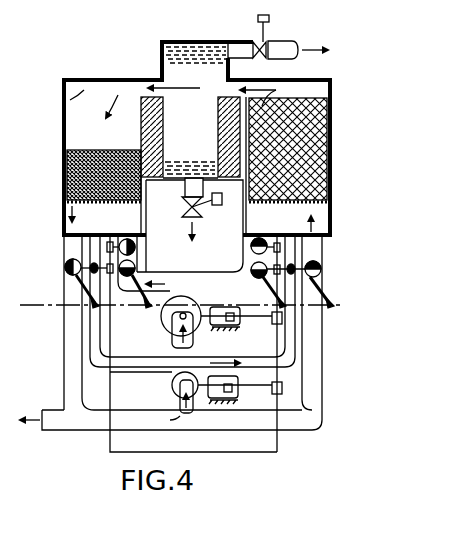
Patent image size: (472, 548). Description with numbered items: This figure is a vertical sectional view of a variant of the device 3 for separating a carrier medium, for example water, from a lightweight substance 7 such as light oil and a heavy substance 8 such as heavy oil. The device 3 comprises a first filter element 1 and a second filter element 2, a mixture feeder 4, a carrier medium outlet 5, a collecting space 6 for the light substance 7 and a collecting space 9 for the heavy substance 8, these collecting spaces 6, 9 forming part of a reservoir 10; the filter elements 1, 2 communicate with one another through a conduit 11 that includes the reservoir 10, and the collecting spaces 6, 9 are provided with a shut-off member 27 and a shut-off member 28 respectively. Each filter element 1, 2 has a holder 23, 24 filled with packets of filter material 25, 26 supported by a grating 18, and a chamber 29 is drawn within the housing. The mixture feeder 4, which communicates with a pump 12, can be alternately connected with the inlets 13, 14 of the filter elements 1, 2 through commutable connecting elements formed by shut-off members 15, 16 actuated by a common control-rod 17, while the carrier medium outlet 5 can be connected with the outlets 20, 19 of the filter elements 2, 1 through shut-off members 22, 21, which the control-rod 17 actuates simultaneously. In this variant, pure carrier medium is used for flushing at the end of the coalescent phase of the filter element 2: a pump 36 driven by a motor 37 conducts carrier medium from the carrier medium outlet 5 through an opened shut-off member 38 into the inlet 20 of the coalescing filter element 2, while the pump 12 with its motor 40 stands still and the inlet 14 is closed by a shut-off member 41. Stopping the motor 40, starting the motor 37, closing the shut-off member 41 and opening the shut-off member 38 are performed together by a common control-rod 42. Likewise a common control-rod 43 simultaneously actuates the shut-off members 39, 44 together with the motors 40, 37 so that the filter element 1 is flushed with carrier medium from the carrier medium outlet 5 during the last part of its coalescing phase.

The first filter element 1 is at (64, 166).
The second filter element 2 is at (332, 178).
The device 3 is at (100, 58).
The mixture feeder 4 is at (170, 296).
The carrier medium outlet 5 is at (54, 410).
The collecting space 6 is at (176, 40).
The lightweight substance 7 is at (206, 40).
The heavy substance 8 is at (185, 191).
The collecting space 9 is at (160, 186).
The reservoir 10 is at (202, 136).
The conduit 11 is at (156, 78).
The pump 12 is at (164, 310).
The inlet 13 is at (140, 242).
The inlet 14 is at (252, 234).
The shut-off member 15 is at (136, 268).
The shut-off member 16 is at (251, 270).
The control-rod 17 is at (180, 313).
The grating 18 is at (116, 203).
The outlet 19 is at (64, 242).
The outlet 20 is at (324, 242).
The shut-off member 21 is at (65, 266).
The shut-off member 22 is at (322, 266).
The holder 23 is at (62, 102).
The holder 24 is at (332, 108).
The filter material 25 is at (62, 136).
The filter material 26 is at (300, 150).
The shut-off member 27 is at (262, 42).
The shut-off member 28 is at (186, 214).
The chamber 29 is at (96, 116).
The pump 36 is at (174, 388).
The motor 37 is at (232, 404).
The shut-off member 38 is at (314, 278).
The shut-off member 39 is at (136, 248).
The motor 40 is at (225, 329).
The shut-off member 41 is at (251, 248).
The control-rod 42 is at (278, 448).
The control-rod 43 is at (110, 442).
The shut-off member 44 is at (90, 270).